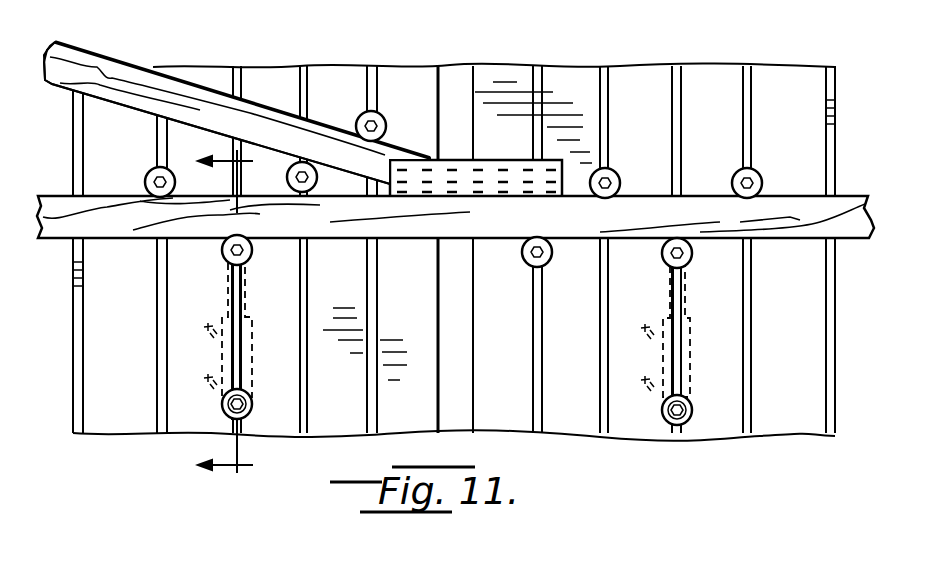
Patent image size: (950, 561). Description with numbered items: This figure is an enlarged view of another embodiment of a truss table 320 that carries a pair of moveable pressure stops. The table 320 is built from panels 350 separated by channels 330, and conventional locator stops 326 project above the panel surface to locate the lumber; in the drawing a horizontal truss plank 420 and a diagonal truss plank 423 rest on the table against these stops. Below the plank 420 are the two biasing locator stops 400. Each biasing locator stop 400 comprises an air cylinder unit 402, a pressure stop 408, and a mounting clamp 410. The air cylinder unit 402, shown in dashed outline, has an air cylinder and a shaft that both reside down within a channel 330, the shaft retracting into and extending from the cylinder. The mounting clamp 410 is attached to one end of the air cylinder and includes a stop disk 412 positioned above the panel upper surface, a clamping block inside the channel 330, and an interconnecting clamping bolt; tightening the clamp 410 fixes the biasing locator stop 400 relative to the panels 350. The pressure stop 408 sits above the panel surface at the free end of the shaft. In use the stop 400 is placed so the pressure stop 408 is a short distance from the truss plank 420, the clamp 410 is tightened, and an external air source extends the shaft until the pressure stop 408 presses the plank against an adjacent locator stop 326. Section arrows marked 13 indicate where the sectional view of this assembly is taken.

The section line 13- 13 is at (242, 318).
The truss table 320 is at (640, 447).
The locator stop 326 is at (303, 162).
The channel 330 is at (684, 442).
The panel 350 is at (183, 420).
The biasing locator stop 400 is at (494, 377).
The air cylinder unit 402 is at (222, 356).
The pressure stop 408 is at (222, 250).
The mounting clamp 410 is at (217, 420).
The stop disk 412 is at (222, 410).
The horizontal rail 420 is at (62, 242).
The diagonal brace 423 is at (105, 197).